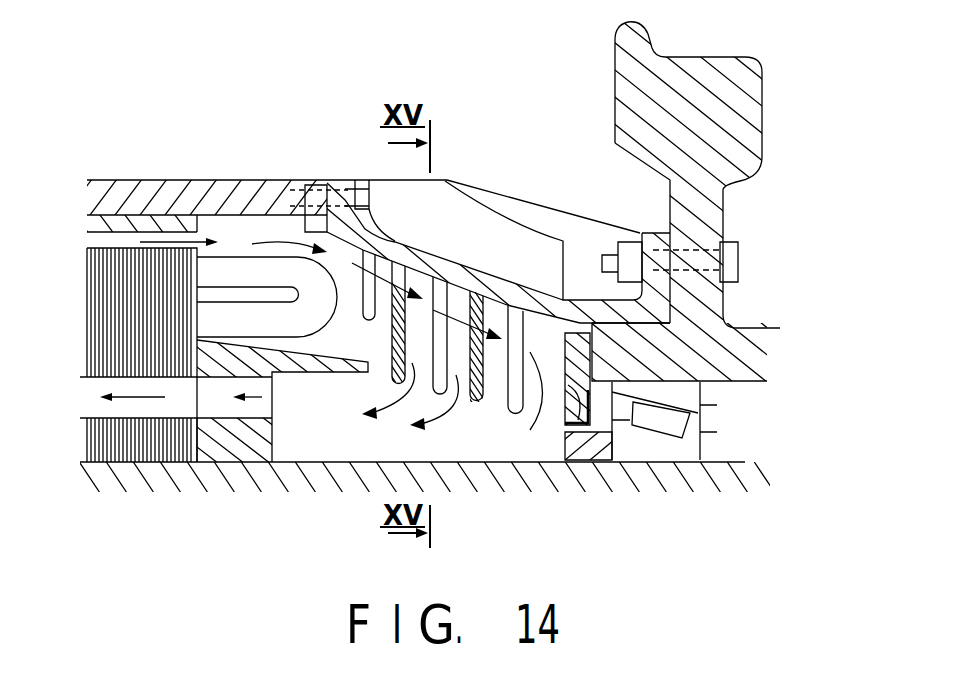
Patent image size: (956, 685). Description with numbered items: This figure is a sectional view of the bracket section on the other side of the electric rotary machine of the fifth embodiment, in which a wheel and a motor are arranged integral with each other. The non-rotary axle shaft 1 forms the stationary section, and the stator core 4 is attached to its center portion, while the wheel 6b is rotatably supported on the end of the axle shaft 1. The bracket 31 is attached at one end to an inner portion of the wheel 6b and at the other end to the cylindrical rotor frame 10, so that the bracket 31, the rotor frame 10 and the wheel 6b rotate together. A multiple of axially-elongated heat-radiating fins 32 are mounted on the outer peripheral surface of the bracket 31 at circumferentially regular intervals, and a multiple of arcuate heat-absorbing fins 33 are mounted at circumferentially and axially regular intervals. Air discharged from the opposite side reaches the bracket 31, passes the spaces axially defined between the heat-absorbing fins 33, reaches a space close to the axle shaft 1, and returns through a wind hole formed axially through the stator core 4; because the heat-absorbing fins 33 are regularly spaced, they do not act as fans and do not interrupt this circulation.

The rotor frame 10 is at (145, 182).
The stator core 4 is at (115, 310).
The bracket 31 is at (413, 252).
The heat-absorbing fins 33 is at (392, 371).
The heat-radiating fins 32 is at (505, 229).
The wheel 6b is at (711, 74).
The axle shaft 1 is at (722, 459).